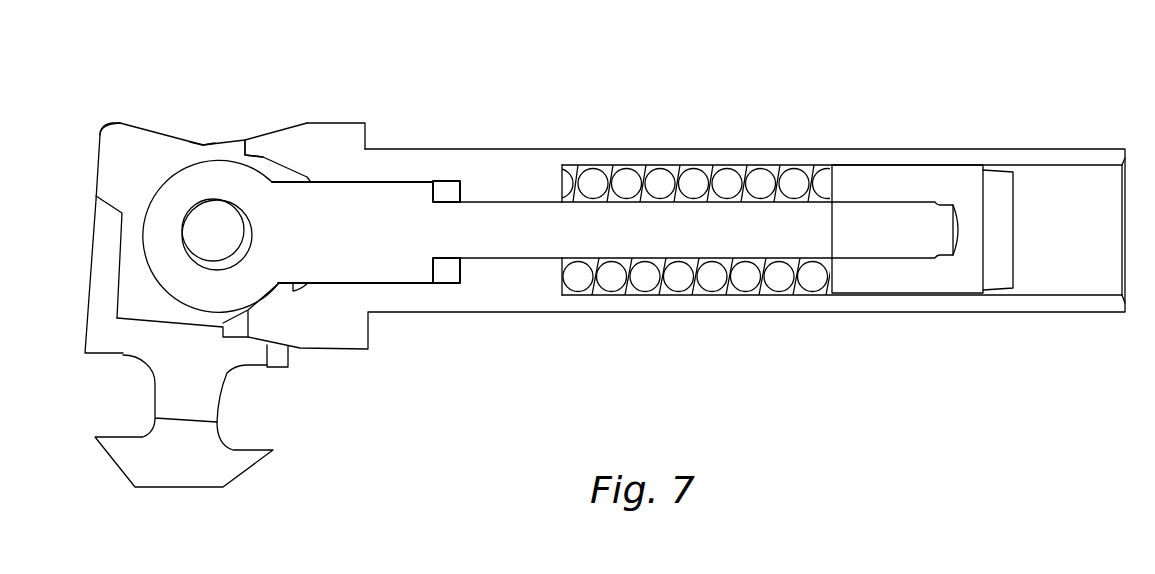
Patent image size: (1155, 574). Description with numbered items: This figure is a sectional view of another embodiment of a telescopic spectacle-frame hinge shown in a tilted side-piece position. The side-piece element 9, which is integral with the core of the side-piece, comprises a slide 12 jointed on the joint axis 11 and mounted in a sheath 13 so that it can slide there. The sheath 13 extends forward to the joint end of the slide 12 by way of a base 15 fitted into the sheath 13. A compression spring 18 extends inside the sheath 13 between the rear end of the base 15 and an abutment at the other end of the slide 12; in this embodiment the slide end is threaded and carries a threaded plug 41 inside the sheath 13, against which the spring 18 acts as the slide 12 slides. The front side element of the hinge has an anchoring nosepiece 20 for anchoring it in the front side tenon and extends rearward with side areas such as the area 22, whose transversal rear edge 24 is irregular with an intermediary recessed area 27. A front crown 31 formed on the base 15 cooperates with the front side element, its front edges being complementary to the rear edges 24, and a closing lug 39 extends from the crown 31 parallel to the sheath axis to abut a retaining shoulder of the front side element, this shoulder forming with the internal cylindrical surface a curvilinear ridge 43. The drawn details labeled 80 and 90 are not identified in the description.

The side-piece element 9 is at (620, 136).
The joint axis 11 is at (220, 220).
The slide 12 is at (397, 207).
The sheath 13 is at (692, 304).
The base 15 is at (340, 323).
The spring 18 is at (728, 180).
The anchoring nosepiece 20 is at (193, 403).
The side area 22 is at (148, 160).
The transversal rear edge 24 is at (120, 125).
The intermediary recessed area 27 is at (205, 145).
The front crown 31 is at (330, 140).
The closing lug 39 is at (275, 320).
The threaded plug 41 is at (883, 185).
The curvilinear ridge 43 is at (280, 303).
The locking tab 80 is at (263, 152).
The shaft end 90 is at (888, 233).